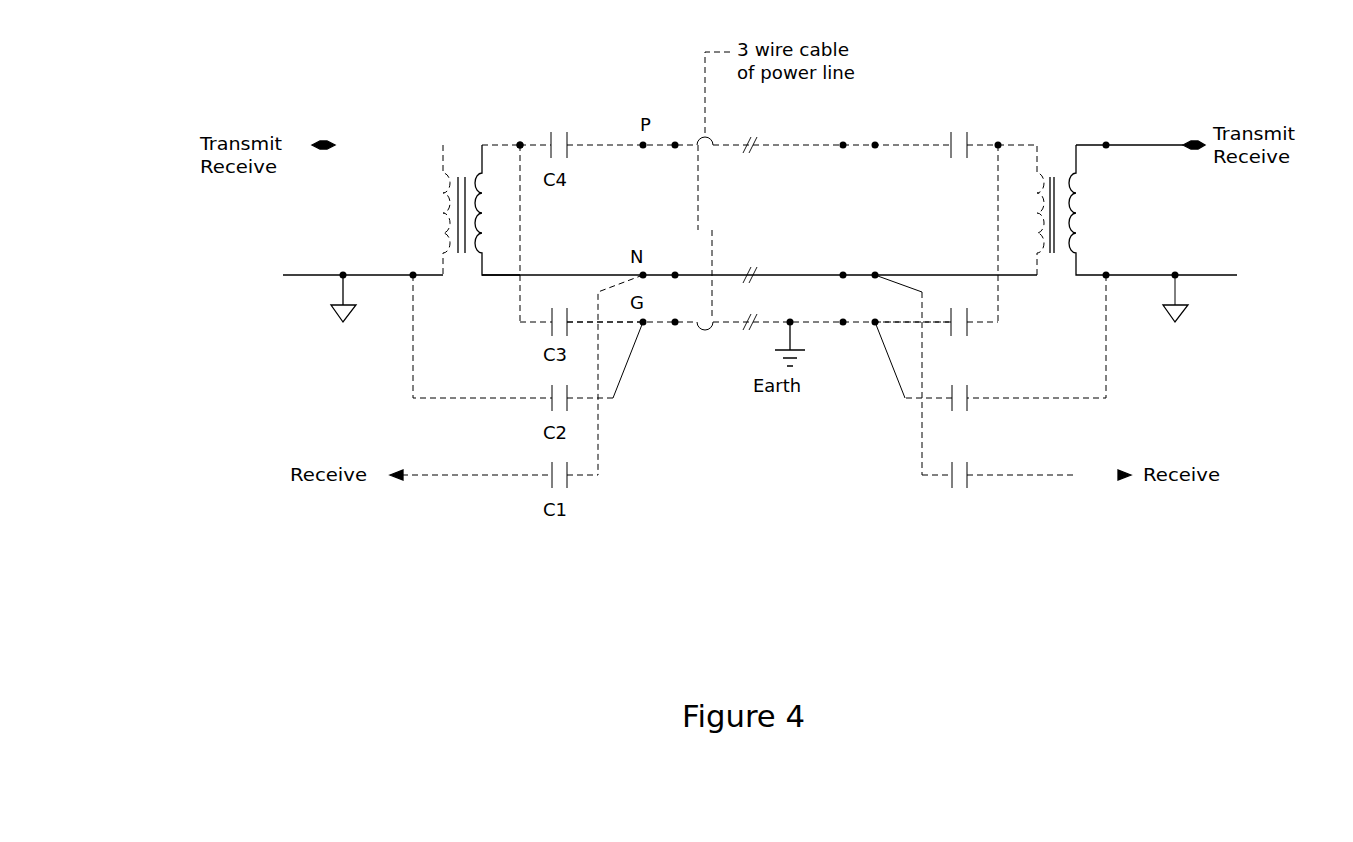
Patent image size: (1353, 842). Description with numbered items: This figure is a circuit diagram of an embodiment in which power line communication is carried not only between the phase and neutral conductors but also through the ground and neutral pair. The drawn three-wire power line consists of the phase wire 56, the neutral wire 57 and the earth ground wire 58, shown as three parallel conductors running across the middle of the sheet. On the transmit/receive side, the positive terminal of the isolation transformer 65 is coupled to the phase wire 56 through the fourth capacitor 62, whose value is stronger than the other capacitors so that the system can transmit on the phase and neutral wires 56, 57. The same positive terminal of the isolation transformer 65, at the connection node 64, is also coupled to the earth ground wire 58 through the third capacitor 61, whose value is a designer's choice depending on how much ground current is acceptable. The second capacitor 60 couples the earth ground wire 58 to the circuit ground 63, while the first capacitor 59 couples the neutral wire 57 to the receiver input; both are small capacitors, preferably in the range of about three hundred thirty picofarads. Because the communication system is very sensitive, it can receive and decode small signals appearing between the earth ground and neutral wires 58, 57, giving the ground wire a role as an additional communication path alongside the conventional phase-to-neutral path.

The phase wire 56 is at (636, 102).
The neutral wire 57 is at (636, 238).
The earth ground wire 58 is at (656, 333).
The capacitor C1 59 is at (540, 487).
The capacitor C2 60 is at (540, 409).
The capacitor C3 61 is at (540, 332).
The capacitor C4 62 is at (556, 126).
The circuit ground 63 is at (300, 272).
The transformer output connection node 64 is at (515, 140).
The isolation transformer 65 is at (465, 280).